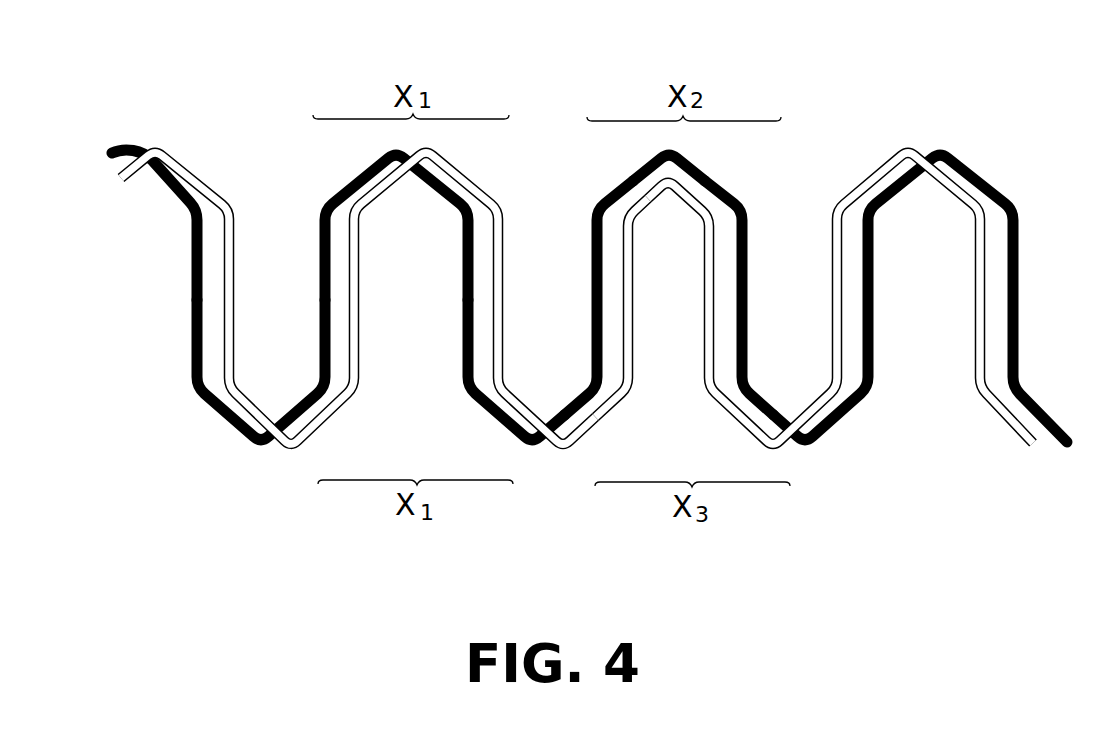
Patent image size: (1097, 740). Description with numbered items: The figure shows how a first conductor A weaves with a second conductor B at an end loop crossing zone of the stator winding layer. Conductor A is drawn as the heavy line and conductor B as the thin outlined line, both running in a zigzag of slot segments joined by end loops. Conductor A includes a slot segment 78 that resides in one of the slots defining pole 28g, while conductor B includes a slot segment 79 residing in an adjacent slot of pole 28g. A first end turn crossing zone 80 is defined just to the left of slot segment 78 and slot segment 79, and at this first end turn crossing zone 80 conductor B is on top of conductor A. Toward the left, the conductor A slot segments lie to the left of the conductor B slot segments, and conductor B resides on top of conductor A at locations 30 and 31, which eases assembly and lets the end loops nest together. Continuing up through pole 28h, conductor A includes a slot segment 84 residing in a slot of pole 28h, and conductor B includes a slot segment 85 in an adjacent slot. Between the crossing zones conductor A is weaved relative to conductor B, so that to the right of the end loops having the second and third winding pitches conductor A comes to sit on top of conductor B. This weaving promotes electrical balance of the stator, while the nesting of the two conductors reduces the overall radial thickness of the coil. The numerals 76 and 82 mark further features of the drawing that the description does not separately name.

The conductor A is at (567, 284).
The conductor B is at (577, 355).
The pole 28g is at (321, 283).
The pole 28h is at (800, 233).
The location 30 is at (261, 483).
The location 31 is at (541, 485).
The crown of second pattern 76 is at (774, 549).
The slot segment 78 is at (633, 297).
The slot segment 79 is at (592, 298).
The first end turn crossing zone 80 is at (570, 146).
The gap region 82 is at (788, 171).
The slot segment 84 is at (704, 272).
The slot segment 85 is at (745, 305).